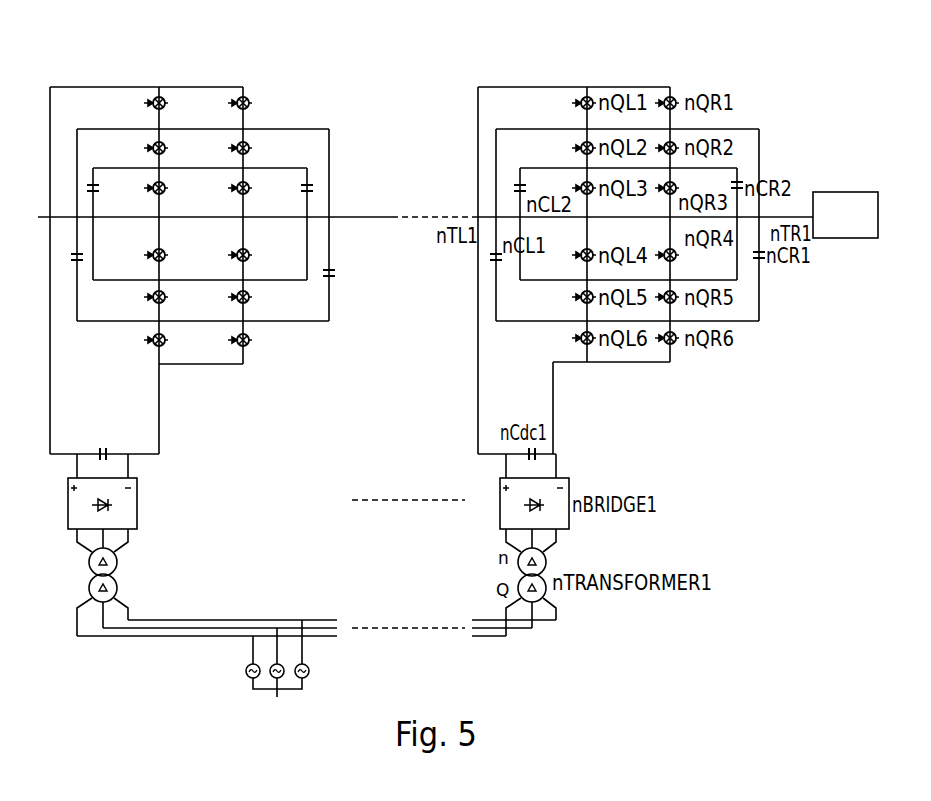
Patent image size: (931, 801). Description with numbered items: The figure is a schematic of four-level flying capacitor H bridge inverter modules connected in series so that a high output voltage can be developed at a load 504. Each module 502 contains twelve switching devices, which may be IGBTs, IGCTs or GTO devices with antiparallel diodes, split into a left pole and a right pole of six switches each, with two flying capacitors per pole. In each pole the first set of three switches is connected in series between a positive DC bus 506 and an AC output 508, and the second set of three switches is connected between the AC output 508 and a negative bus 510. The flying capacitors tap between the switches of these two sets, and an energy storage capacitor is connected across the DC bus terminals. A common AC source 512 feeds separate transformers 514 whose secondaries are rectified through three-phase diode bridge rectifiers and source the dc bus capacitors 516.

The module 502 is at (217, 72).
The load 504 is at (830, 191).
The positive DC bus 506 is at (49, 405).
The AC output 508 is at (338, 217).
The negative bus 510 is at (160, 437).
The common AC source 512 is at (246, 671).
The transformers 514 is at (117, 593).
The dc bus capacitors 516 is at (137, 529).